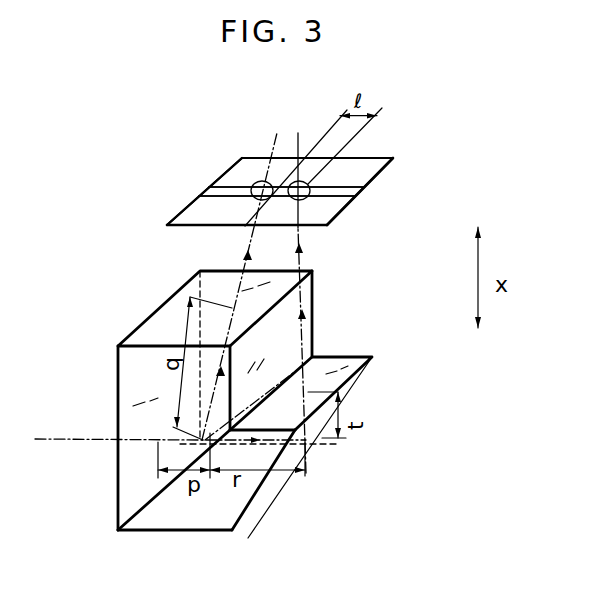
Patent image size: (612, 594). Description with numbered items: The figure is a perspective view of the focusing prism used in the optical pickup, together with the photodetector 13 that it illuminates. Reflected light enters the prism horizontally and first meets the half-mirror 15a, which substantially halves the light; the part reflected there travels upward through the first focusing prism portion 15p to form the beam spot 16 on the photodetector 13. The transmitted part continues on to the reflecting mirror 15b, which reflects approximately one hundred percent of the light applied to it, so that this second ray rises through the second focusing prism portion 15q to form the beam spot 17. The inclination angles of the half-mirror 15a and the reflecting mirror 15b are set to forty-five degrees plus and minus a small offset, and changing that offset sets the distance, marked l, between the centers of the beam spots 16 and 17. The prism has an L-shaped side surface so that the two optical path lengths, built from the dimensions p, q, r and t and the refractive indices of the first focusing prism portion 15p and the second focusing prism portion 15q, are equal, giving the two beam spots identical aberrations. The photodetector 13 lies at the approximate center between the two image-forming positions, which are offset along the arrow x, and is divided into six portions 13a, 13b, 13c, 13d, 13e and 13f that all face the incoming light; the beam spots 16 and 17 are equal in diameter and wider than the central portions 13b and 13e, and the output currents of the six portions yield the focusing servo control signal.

The photodetector 13 is at (349, 204).
The photodetector portion 13a is at (199, 226).
The photodetector portion 13b is at (207, 187).
The photodetector portion 13c is at (231, 170).
The photodetector portion 13d is at (327, 226).
The photodetector portion 13e is at (364, 188).
The photodetector portion 13f is at (393, 160).
The beam spot 16 is at (261, 180).
The beam spot 17 is at (308, 183).
The first focusing prism portion 15p is at (130, 385).
The second focusing prism portion 15q is at (204, 527).
The half-mirror 15a is at (160, 495).
The reflecting mirror 15b is at (283, 473).